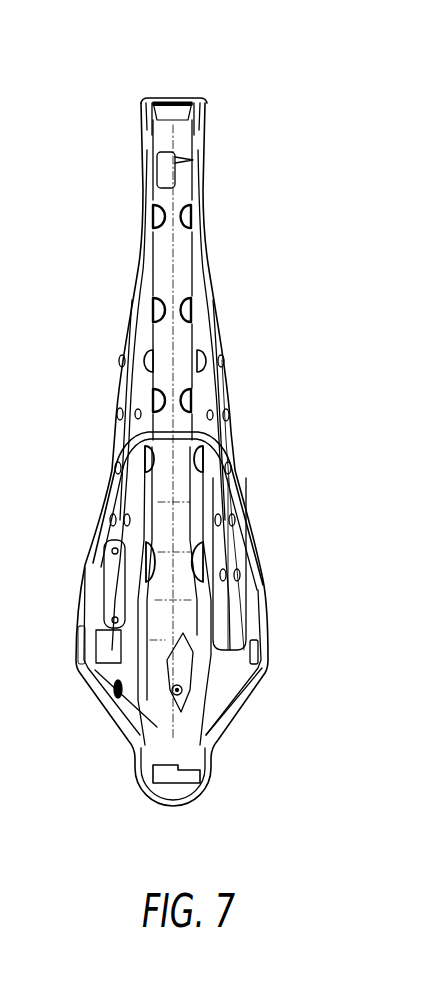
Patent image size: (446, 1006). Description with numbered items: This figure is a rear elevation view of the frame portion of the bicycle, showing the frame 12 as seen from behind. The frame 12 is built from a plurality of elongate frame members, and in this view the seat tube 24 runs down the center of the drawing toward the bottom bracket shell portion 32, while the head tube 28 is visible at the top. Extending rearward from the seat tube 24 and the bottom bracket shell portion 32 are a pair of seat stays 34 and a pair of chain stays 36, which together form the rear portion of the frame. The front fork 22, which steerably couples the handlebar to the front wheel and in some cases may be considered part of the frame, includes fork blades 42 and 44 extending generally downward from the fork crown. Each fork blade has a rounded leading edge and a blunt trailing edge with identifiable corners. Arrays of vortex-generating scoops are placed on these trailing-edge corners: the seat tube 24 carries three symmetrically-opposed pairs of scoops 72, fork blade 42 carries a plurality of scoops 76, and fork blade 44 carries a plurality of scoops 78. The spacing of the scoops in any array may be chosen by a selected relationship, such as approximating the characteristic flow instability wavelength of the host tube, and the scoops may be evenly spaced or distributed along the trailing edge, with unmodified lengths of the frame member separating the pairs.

The frame 12 is at (257, 99).
The head tube 28 is at (140, 133).
The scoops 72 is at (184, 211).
The seat tube 24 is at (177, 262).
The front fork 22 is at (216, 322).
The fork blade 44 is at (226, 391).
The fork blade 42 is at (122, 382).
The scoops 76 is at (119, 414).
The scoops 78 is at (229, 415).
The seat stays 34 is at (240, 512).
The chain stays 36 is at (252, 679).
The bottom bracket shell portion 32 is at (203, 667).